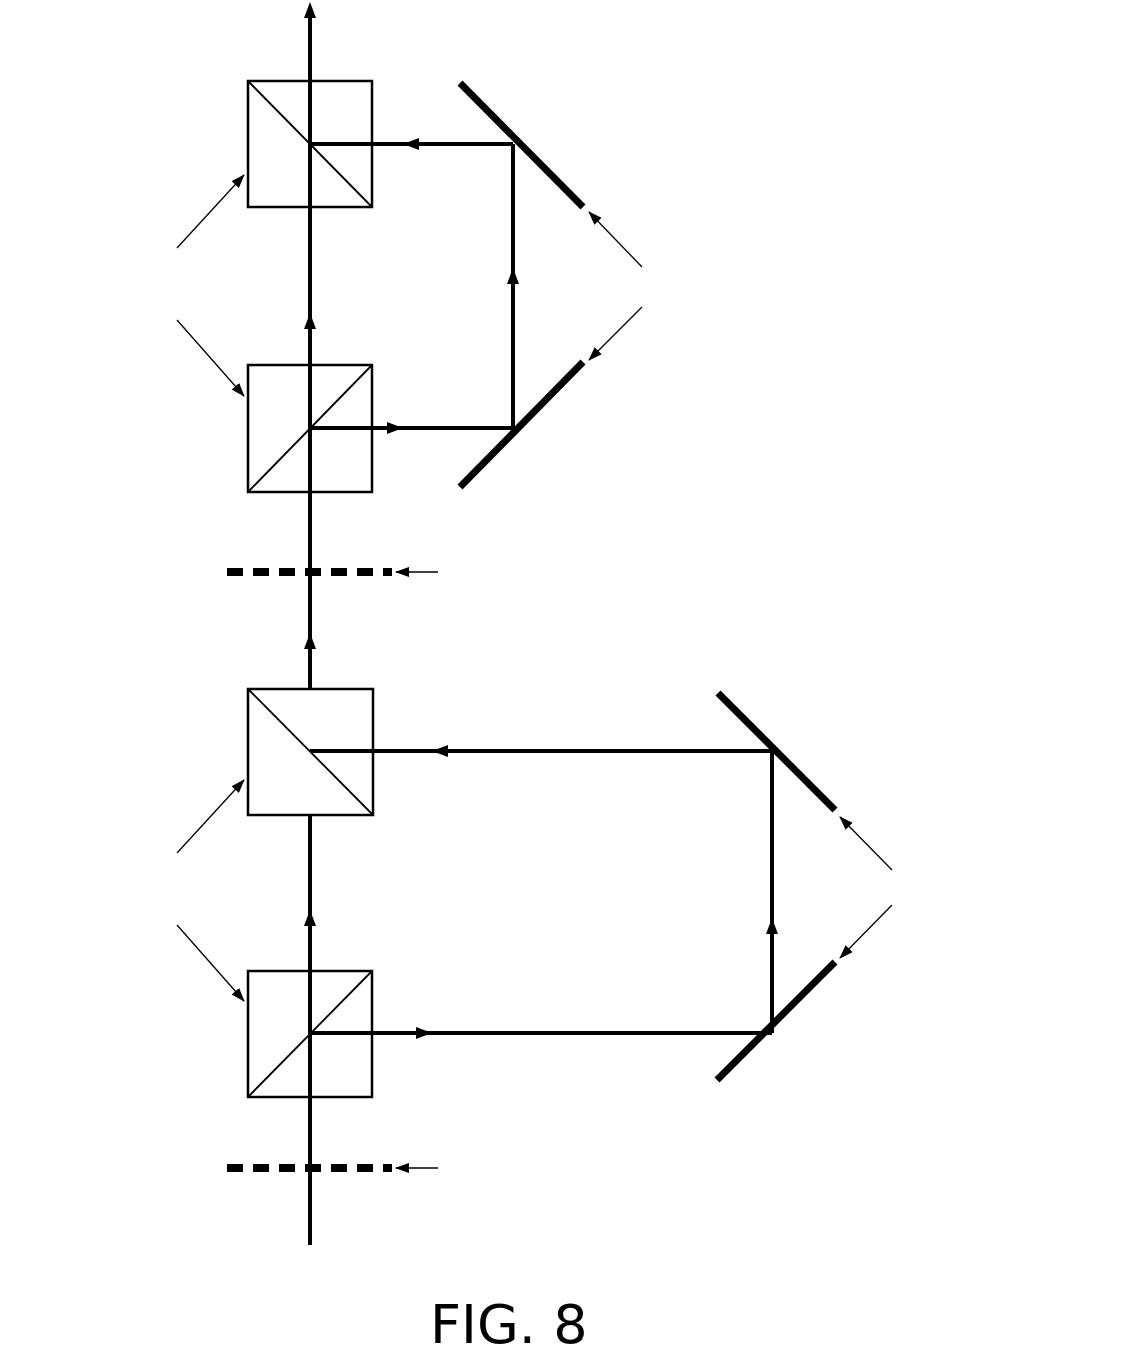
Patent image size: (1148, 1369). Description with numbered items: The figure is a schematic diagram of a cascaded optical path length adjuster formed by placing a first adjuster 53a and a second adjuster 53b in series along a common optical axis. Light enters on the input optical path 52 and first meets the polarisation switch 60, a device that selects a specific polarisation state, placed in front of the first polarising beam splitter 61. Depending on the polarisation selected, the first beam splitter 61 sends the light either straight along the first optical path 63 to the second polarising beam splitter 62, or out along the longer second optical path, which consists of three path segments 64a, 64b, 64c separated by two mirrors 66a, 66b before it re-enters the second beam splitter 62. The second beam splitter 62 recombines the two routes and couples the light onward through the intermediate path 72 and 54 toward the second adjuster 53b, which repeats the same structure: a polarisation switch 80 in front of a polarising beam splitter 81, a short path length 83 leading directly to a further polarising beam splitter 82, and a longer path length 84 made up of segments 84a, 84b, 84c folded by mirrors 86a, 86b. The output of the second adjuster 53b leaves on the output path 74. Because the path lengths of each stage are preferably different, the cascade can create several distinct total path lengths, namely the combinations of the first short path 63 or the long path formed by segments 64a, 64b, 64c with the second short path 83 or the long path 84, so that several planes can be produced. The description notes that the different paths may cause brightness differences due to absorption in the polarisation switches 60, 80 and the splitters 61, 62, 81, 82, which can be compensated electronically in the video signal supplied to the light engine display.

The input optical path 52 is at (308, 1217).
The first adjuster 53a is at (517, 829).
The second adjuster 53b is at (452, 269).
The output optical path 54 is at (308, 660).
The polarisation switch 60 is at (227, 1169).
The first polarising beam splitter 61 is at (248, 1033).
The second polarising beam splitter 62 is at (248, 720).
The first optical path 63 is at (313, 873).
The path segment 64a is at (588, 1030).
The path segment 64b is at (770, 883).
The path segment 64c is at (600, 755).
The mirror 66a is at (805, 1005).
The mirror 66b is at (800, 765).
The light beam 72 is at (308, 610).
The output light beam 74 is at (308, 43).
The polarisation switch 80 is at (227, 573).
The polarising beam splitter 81 is at (248, 428).
The polarising beam splitter 82 is at (248, 113).
The path length 83 is at (313, 267).
The path length 84 is at (513, 252).
The s-polarized beam path segment 84a is at (441, 425).
The s-polarized beam path segment 84b is at (513, 337).
The s-polarized beam path segment 84c is at (452, 150).
The mirror 86a is at (564, 396).
The mirror 86b is at (550, 162).